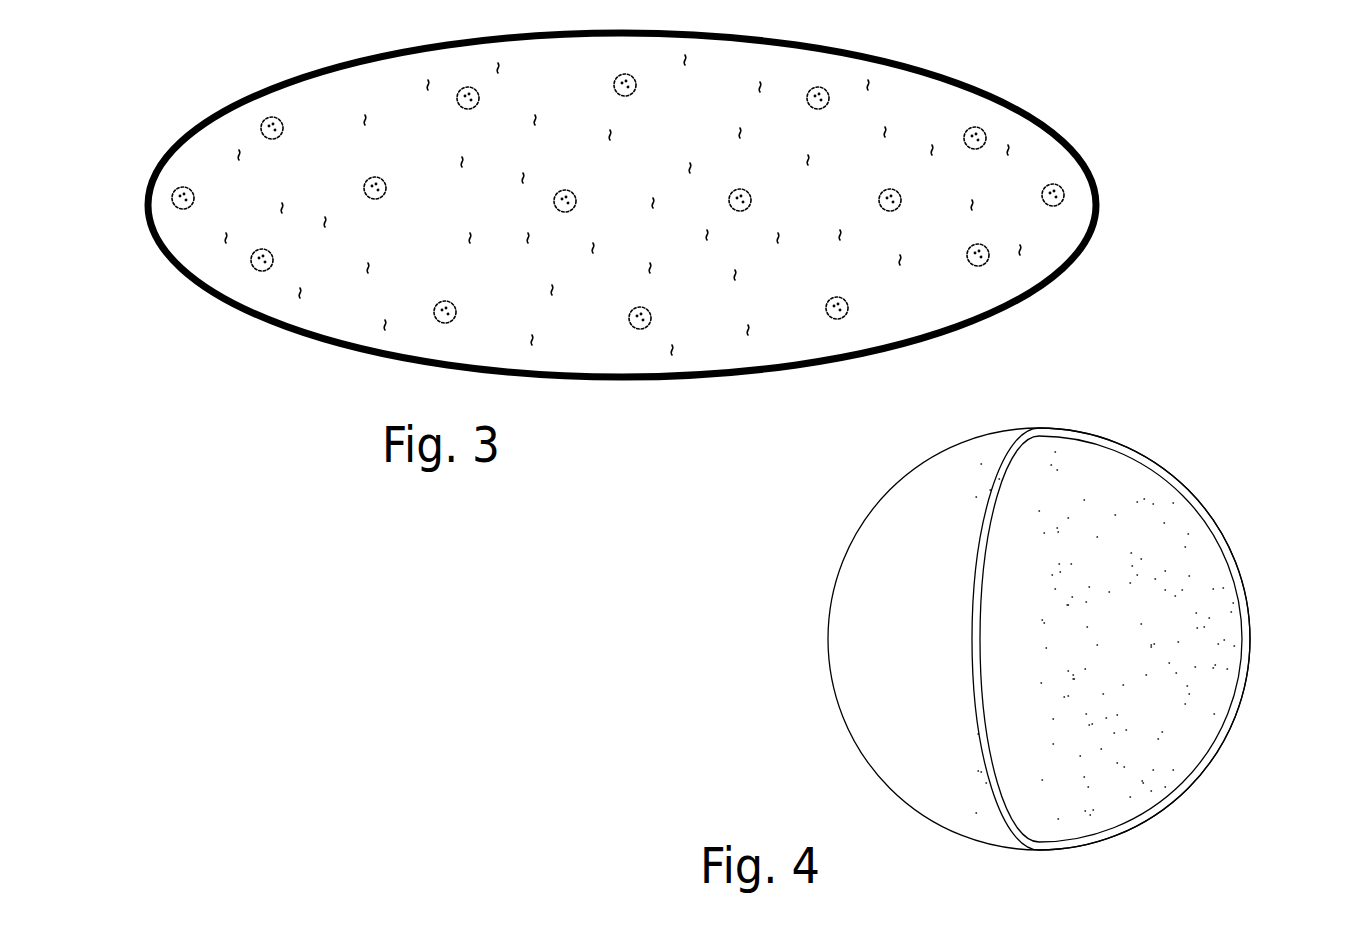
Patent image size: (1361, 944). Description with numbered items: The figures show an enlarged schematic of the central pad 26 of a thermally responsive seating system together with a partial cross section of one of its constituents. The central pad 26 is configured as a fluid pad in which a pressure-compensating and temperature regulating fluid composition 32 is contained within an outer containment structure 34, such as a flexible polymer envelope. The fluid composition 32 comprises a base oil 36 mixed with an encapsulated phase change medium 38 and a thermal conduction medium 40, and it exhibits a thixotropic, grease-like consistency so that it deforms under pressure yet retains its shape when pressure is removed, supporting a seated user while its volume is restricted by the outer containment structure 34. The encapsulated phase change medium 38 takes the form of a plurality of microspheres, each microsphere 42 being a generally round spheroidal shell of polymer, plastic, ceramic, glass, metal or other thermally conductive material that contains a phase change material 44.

In FIG. 3, the central pad 26 is at (658, 243).
In FIG. 3, the fluid composition 32 is at (937, 295).
In FIG. 3, the outer containment structure 34 is at (1050, 283).
In FIG. 3, the base oil 36 is at (332, 305).
In FIG. 3, the encapsulated phase change medium 38 is at (830, 321).
In FIG. 4, the encapsulated phase change medium 38 is at (1077, 636).
In FIG. 3, the thermal conduction medium 40 is at (736, 280).
In FIG. 4, the microsphere 42 is at (1243, 583).
In FIG. 4, the phase change material 44 is at (1155, 722).